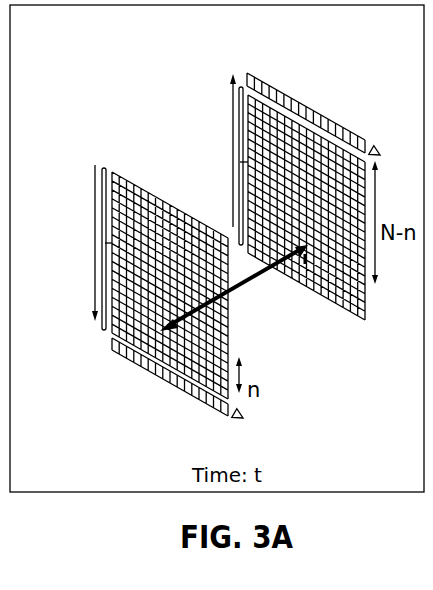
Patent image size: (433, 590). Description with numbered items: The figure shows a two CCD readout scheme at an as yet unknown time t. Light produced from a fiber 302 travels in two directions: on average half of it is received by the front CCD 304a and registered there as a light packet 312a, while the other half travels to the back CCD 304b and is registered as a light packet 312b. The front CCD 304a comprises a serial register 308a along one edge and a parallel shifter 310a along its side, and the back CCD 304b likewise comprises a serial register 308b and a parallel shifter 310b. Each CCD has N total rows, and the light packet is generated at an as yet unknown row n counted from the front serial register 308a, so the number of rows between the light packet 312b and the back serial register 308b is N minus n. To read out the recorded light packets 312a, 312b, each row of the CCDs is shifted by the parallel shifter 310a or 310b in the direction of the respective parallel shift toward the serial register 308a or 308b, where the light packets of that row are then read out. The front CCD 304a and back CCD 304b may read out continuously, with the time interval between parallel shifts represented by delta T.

The fiber 302 is at (242, 284).
The front CCD 304a is at (229, 337).
The back CCD 304b is at (247, 74).
The serial register 308a is at (147, 407).
The serial register 308b is at (298, 62).
The parallel shifter 310a is at (103, 331).
The parallel shifter 310b is at (218, 85).
The light packet 312a is at (164, 325).
The light packet 312b is at (307, 280).